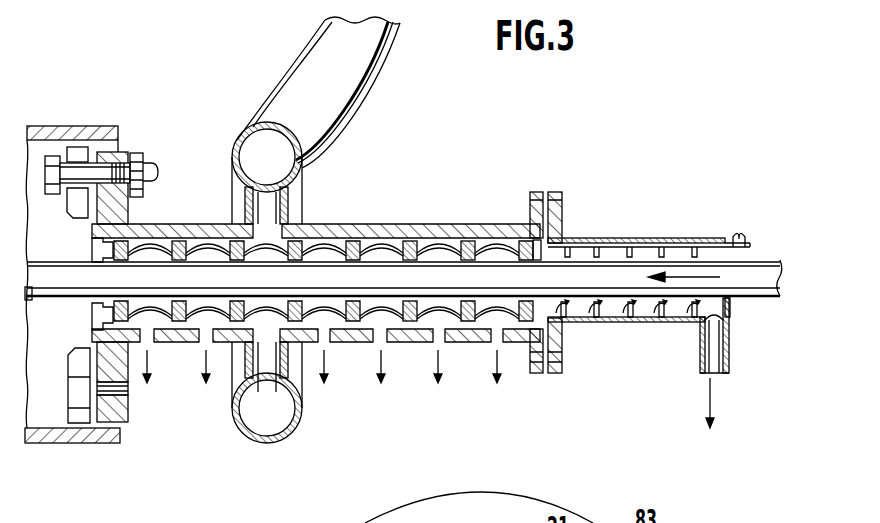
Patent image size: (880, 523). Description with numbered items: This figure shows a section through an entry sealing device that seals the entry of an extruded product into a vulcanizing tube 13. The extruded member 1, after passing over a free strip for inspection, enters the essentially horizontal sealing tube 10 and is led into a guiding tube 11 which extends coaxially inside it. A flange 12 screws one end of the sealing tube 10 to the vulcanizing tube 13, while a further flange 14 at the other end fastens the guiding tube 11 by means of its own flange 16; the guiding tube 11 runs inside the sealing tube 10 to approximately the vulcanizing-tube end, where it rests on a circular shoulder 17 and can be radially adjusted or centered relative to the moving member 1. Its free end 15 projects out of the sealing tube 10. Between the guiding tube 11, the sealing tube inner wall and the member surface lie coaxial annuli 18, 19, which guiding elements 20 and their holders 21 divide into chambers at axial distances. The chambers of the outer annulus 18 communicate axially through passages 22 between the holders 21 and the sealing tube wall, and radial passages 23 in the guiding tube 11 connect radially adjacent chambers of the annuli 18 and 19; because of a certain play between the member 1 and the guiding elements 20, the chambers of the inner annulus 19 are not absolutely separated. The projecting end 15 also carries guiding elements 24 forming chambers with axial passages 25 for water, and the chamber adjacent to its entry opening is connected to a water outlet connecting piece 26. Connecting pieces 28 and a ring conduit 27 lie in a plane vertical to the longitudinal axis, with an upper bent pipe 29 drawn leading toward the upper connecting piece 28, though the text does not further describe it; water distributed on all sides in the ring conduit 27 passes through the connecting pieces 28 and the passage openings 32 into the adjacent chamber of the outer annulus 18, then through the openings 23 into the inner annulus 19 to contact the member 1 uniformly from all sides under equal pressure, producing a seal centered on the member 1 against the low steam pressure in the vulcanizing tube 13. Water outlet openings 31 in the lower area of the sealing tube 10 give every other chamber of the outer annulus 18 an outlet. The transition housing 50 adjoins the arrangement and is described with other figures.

The member 1 is at (767, 265).
The sealing tube 10 is at (385, 222).
The guiding tube 11 is at (419, 246).
The flange 12 is at (128, 216).
The vulcanizing tube 13 is at (77, 438).
The further flange 14 is at (538, 192).
The free end 15 is at (665, 237).
The flange 16 is at (560, 195).
The circular shoulder 17 is at (100, 253).
The outer annulus 18 is at (327, 245).
The inner annulus 19 is at (388, 247).
The guiding elements 20 is at (413, 320).
The holders 21 is at (473, 247).
The passages 22 is at (182, 248).
The radial passages 23 is at (497, 247).
The guiding elements 24 is at (590, 248).
The axial passages 25 is at (613, 320).
The water outlet connecting piece 26 is at (728, 360).
The ring conduit 27 is at (243, 433).
The connecting pieces 28 is at (286, 200).
The inlet pipe 29 is at (381, 58).
The water outlet openings 31 is at (380, 338).
The passage openings 32 is at (266, 367).
The transition housing 50 is at (730, 310).